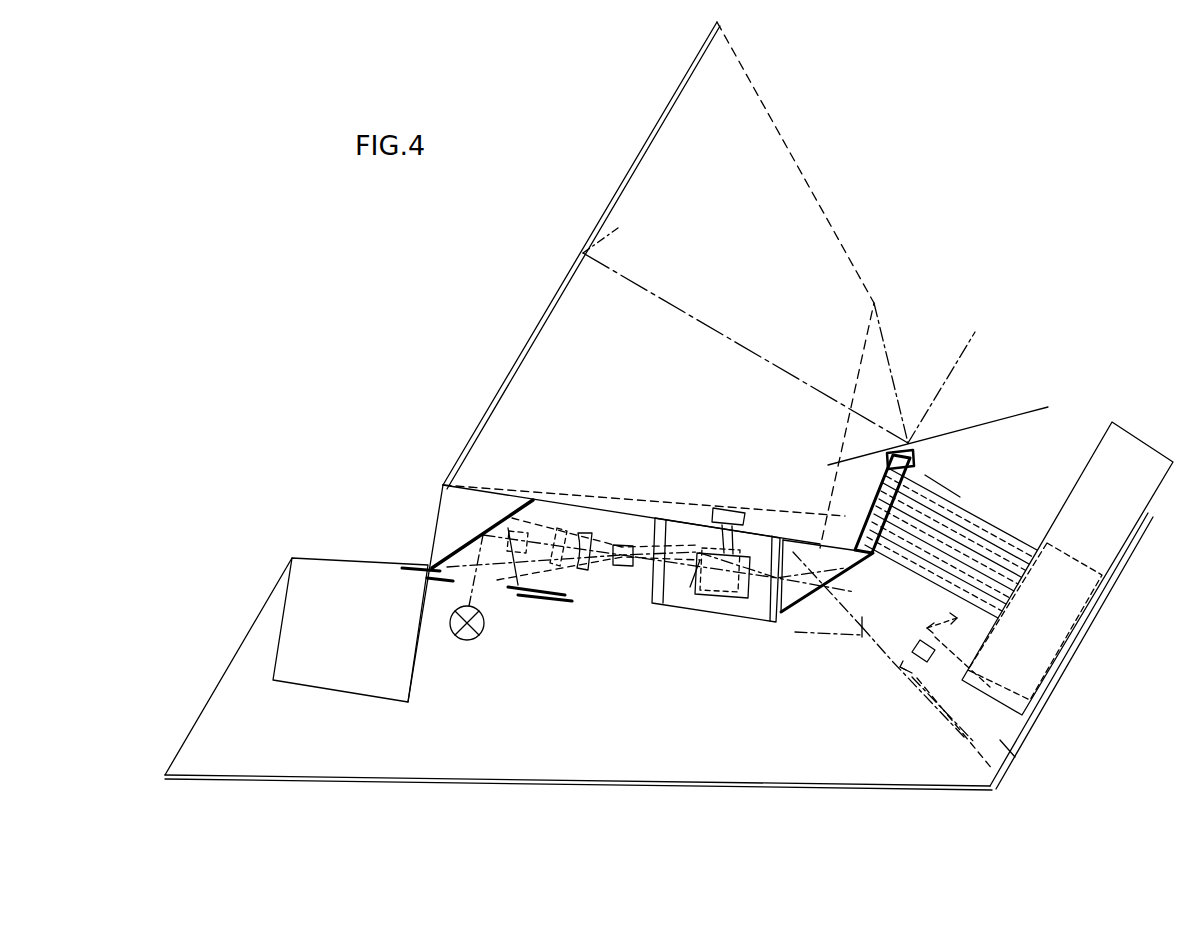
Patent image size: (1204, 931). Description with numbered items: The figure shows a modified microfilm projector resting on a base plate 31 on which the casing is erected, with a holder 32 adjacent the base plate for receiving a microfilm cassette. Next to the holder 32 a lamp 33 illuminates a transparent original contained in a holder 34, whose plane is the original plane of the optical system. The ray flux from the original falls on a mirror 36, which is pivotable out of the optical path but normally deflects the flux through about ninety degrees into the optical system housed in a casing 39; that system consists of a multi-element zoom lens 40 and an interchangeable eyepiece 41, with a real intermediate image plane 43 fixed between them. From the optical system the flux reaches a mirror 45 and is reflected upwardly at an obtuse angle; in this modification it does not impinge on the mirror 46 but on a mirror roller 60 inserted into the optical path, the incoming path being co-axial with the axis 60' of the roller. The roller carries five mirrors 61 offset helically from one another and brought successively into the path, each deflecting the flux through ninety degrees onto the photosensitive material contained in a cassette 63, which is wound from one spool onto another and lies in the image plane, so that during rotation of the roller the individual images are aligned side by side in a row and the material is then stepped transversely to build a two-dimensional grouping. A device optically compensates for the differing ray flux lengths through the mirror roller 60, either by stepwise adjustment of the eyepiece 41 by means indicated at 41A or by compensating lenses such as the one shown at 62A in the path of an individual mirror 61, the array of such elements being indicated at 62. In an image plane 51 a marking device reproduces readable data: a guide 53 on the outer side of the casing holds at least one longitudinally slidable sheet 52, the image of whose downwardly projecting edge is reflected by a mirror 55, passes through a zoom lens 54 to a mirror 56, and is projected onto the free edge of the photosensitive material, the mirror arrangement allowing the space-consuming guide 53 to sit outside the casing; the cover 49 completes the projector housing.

The base plate 31 is at (615, 778).
The holder 32 is at (350, 630).
The lamp 33 is at (467, 641).
The holder 34 is at (542, 598).
The mirror 36 is at (462, 545).
The casing 39 is at (716, 544).
The multi-element zoom lens 40 is at (620, 566).
The eyepiece 41 is at (717, 587).
The adjusting means 41A is at (747, 483).
The real intermediate image plane 43 is at (690, 587).
The mirror 45 is at (793, 617).
The mirror 46 is at (1015, 415).
The lid / cover 49 is at (520, 352).
The image plane 51 is at (1093, 453).
The sheet 52 is at (1010, 752).
The guide 53 is at (1072, 645).
The zoom lens 54 is at (917, 648).
The mirror 55 is at (903, 692).
The mirror 56 is at (950, 618).
The mirror roller 60 is at (854, 504).
The axis of the roller 60' is at (940, 387).
The mirrors 61 is at (914, 457).
The louvre array 62 is at (978, 563).
The compensating lens 62A is at (941, 496).
The cassette 63 is at (1075, 565).